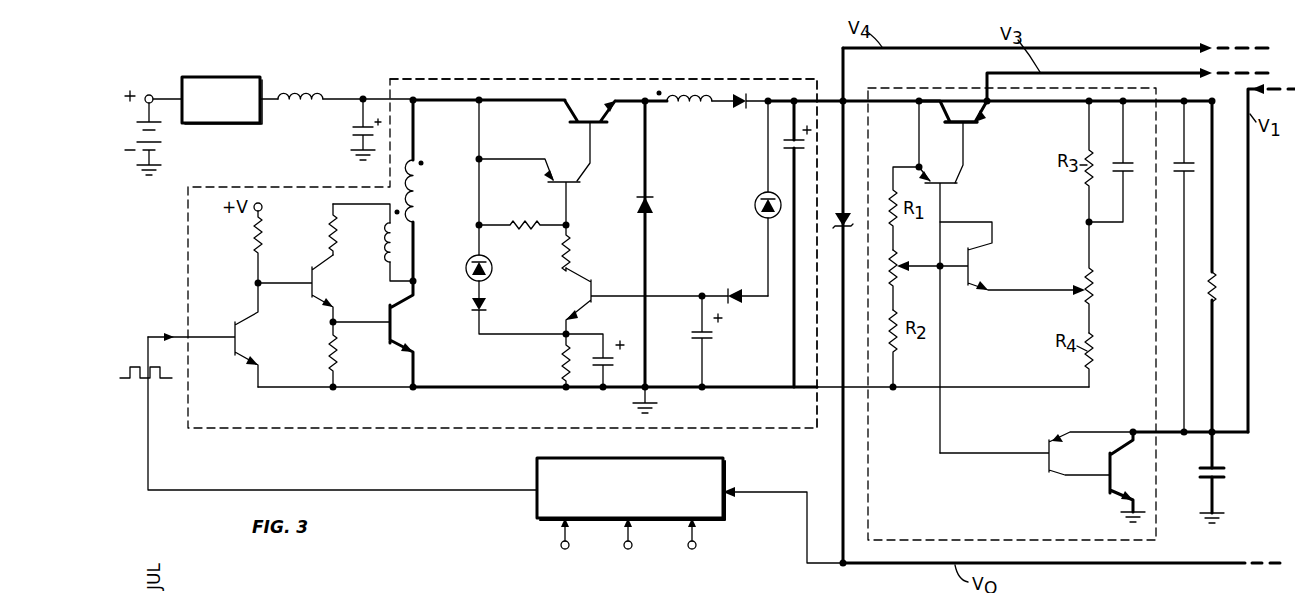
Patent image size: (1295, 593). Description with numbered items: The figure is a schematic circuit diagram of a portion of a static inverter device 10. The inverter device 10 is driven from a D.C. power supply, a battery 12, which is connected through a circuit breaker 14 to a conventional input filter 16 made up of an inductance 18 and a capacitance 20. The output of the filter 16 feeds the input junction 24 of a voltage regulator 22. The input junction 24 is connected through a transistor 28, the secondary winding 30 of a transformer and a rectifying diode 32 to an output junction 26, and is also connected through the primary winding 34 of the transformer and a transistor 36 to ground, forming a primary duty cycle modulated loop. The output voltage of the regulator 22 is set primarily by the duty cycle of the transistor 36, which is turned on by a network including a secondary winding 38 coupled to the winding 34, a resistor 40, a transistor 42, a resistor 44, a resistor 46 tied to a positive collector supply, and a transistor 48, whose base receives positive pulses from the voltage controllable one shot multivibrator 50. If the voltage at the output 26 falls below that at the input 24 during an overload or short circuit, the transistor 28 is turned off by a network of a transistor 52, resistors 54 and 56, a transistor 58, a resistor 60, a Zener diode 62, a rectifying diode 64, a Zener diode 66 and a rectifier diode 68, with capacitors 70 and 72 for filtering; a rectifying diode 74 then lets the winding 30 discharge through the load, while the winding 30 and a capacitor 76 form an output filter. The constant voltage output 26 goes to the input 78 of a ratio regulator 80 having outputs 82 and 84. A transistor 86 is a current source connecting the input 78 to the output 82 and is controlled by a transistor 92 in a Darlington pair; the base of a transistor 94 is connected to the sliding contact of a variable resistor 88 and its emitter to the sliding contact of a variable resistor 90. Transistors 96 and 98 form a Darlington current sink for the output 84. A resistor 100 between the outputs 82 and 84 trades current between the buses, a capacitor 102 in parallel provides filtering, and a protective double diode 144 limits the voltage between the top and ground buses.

The inverter device 10 is at (378, 52).
The battery 12 is at (140, 134).
The circuit breaker 14 is at (201, 83).
The input filter 16 is at (342, 114).
The inductance 18 is at (311, 82).
The capacitance 20 is at (349, 130).
The voltage regulator 22 is at (512, 76).
The input junction 24 is at (415, 102).
The output junction 26 is at (841, 99).
The transistor 28 is at (589, 124).
The secondary winding 30 is at (681, 98).
The rectifying diode 32 is at (739, 96).
The primary winding 34 is at (421, 183).
The transistor 36 is at (398, 315).
The secondary winding 38 is at (387, 232).
The resistor 40 is at (331, 229).
The transistor 42 is at (320, 300).
The resistor 44 is at (330, 351).
The resistor 46 is at (252, 240).
The transistor 48 is at (242, 350).
The voltage controllable one shot multivibrator 50 is at (530, 461).
The transistor 52 is at (584, 184).
The resistor 54 is at (526, 223).
The resistor 56 is at (576, 256).
The transistor 58 is at (594, 292).
The resistor 60 is at (566, 356).
The Zener diode 62 is at (491, 262).
The rectifying diode 64 is at (490, 303).
The Zener diode 66 is at (760, 213).
The rectifier diode 68 is at (738, 292).
The capacitor 70 is at (716, 338).
The capacitor 72 is at (618, 365).
The rectifying diode 74 is at (648, 205).
The capacitor 76 is at (783, 148).
The input 78 is at (919, 99).
The ratio regulator 80 is at (872, 487).
The output 82 is at (986, 99).
The output 84 is at (1214, 436).
The transistor 86 is at (976, 125).
The variable resistor 88 is at (893, 258).
The variable resistor 90 is at (1091, 273).
The transistor 92 is at (958, 184).
The transistor 94 is at (966, 284).
The transistor 96 is at (1106, 484).
The transistor 98 is at (1045, 462).
The resistor 100 is at (1230, 265).
The capacitor 102 is at (1195, 166).
The protective double diode 144 is at (841, 232).